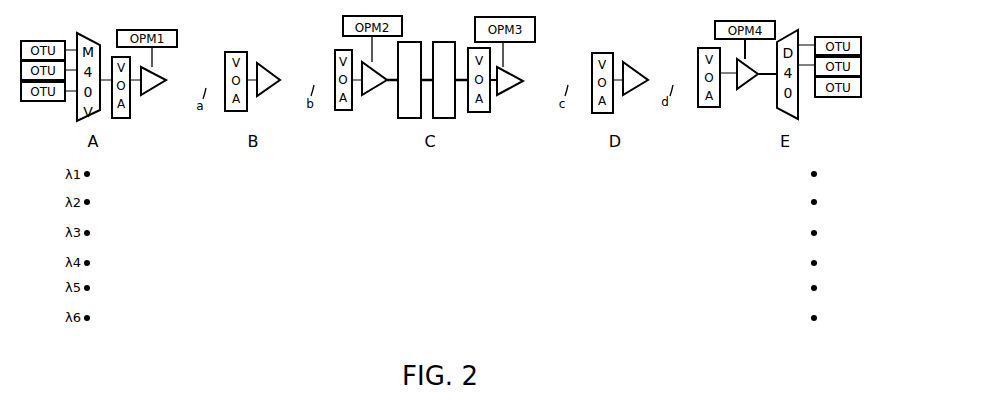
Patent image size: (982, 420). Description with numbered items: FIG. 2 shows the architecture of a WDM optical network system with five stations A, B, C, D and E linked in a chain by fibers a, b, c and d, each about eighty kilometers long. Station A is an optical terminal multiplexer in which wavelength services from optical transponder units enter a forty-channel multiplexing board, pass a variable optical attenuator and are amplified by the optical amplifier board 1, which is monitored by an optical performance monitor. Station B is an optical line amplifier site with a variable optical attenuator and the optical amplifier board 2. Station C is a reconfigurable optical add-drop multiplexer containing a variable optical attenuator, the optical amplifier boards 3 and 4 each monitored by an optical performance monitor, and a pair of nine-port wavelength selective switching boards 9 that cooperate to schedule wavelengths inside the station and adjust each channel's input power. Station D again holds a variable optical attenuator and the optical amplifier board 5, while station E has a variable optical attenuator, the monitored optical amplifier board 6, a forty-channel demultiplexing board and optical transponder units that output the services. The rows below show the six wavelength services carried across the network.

The optical amplifier board 1 is at (153, 81).
The optical amplifier board 2 is at (268, 79).
The optical amplifier board 3 is at (374, 78).
The optical amplifier board 4 is at (510, 81).
The optical amplifier board 5 is at (635, 78).
The optical amplifier board 6 is at (747, 74).
The WSD9 wavelength selective switching board 9 is at (426, 80).